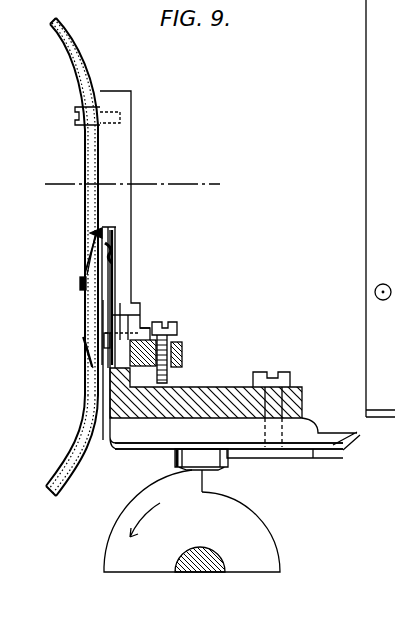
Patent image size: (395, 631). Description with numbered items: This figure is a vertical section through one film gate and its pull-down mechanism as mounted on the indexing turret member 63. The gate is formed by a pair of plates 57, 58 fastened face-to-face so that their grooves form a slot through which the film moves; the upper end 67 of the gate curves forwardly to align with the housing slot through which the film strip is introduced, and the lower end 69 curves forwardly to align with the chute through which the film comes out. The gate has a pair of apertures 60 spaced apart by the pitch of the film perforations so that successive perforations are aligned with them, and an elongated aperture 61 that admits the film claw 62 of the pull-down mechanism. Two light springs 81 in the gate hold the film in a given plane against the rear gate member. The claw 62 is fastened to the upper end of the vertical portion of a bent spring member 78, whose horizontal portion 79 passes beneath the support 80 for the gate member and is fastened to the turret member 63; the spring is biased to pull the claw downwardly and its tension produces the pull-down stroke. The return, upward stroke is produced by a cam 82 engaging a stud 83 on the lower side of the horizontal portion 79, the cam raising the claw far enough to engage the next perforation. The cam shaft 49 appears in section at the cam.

The cam shaft 49 is at (217, 550).
The plate 57 is at (100, 135).
The plate 58 is at (83, 390).
The aperture 60 is at (86, 168).
The elongated aperture 61 is at (95, 253).
The film claw 62 is at (103, 226).
The indexing turret member 63 is at (257, 453).
The upper end of gate 67 is at (88, 53).
The lower end of gate 69 is at (77, 482).
The bent spring member 78 is at (352, 435).
The horizontal portion of spring member 79 is at (313, 453).
The support for gate member 80 is at (122, 100).
The light spring 81 is at (85, 265).
The cam 82 is at (110, 546).
The stud 83 is at (175, 461).